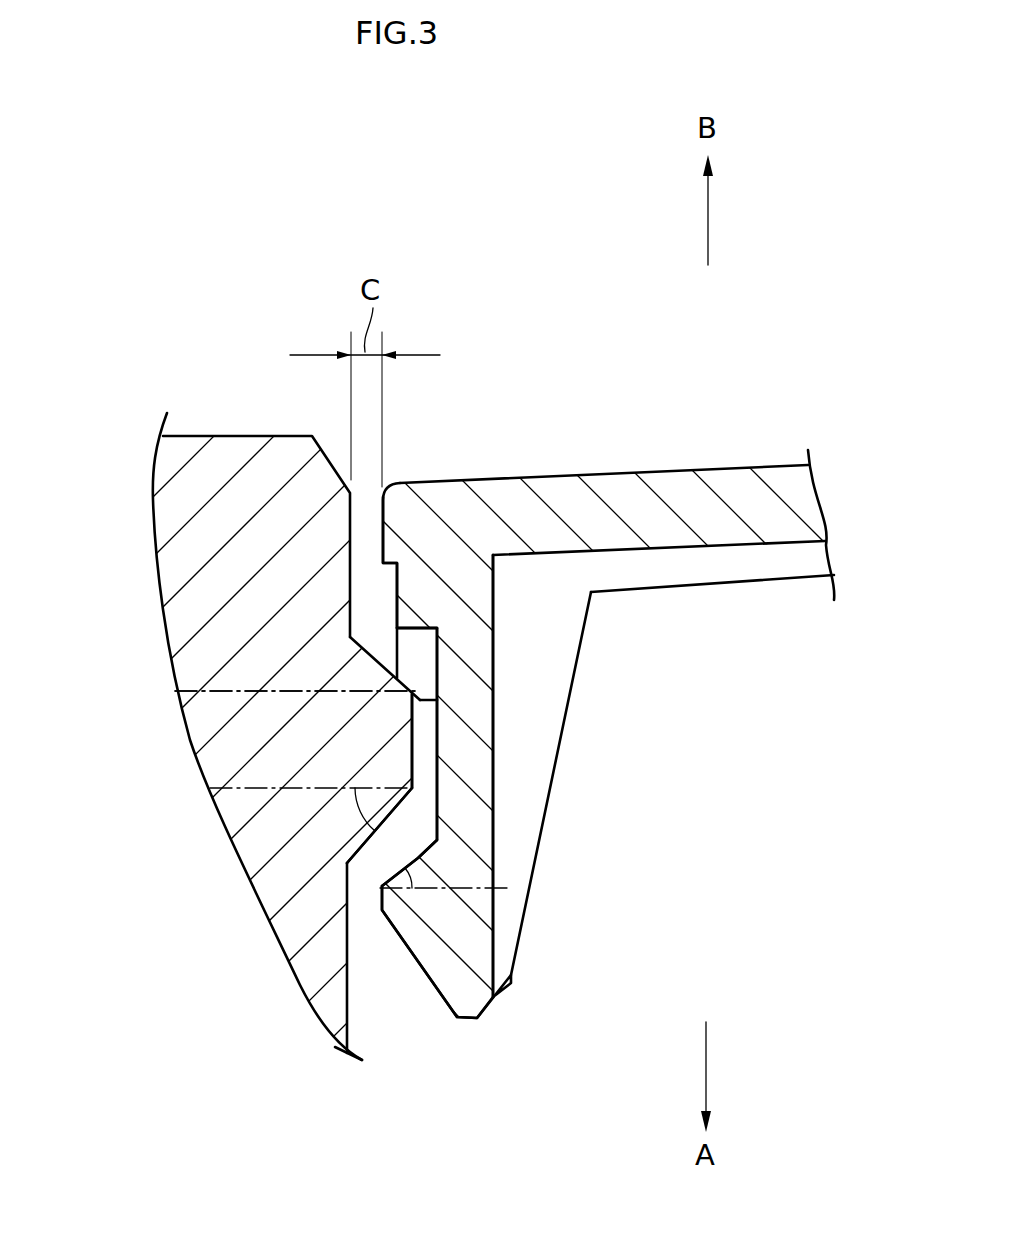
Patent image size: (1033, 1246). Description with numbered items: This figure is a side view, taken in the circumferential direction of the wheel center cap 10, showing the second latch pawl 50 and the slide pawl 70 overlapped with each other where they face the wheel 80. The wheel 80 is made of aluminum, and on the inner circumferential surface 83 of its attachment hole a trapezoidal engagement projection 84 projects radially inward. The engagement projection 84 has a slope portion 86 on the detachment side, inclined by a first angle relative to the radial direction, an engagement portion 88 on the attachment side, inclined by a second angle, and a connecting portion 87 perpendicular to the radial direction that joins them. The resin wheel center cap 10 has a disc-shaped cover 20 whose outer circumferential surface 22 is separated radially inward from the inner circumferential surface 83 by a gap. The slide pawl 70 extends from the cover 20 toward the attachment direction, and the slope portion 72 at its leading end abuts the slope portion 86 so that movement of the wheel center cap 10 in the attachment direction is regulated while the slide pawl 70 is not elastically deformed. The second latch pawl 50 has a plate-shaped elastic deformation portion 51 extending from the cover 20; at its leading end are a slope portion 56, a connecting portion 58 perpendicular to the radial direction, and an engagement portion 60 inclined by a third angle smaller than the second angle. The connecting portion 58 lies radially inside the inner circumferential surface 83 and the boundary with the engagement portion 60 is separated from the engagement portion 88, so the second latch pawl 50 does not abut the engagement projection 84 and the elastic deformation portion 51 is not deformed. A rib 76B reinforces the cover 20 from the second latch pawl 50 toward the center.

The wheel center cap 10 is at (600, 470).
The cover 20 is at (723, 488).
The outer circumferential surface 22 is at (383, 537).
The second latch pawl 50 is at (472, 862).
The elastic deformation portion 51 is at (470, 703).
The slope portion 56 is at (434, 980).
The connecting portion 58 is at (380, 887).
The engagement portion 60 is at (425, 845).
The slide pawl 70 is at (420, 657).
The slope portion 72 is at (410, 705).
The rib 76B is at (557, 648).
The wheel 80 is at (172, 520).
The inner circumferential surface 83 is at (347, 1010).
The engagement projection 84 is at (393, 762).
The slope portion 86 is at (352, 690).
The connecting portion 87 is at (415, 748).
The engagement portion 88 is at (398, 816).